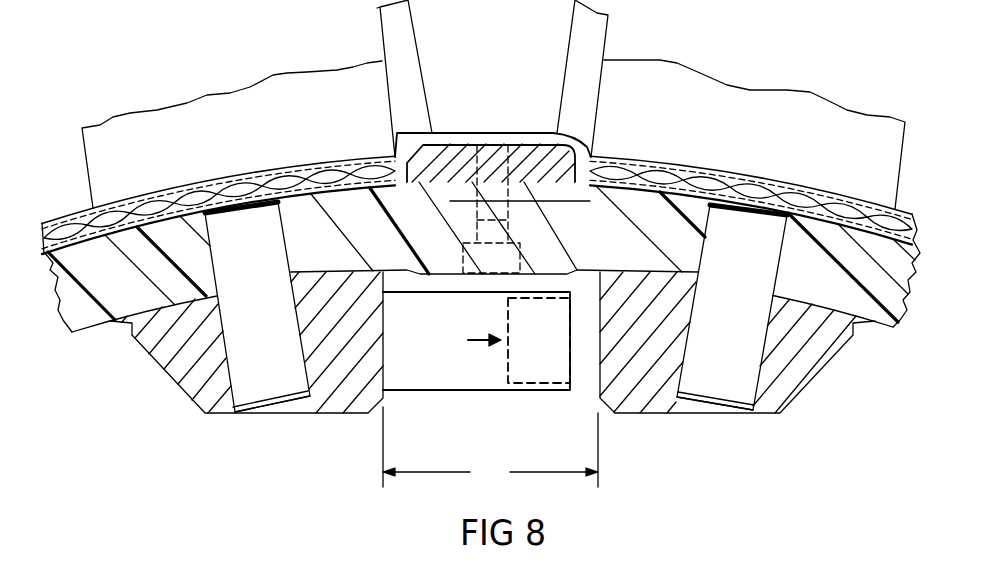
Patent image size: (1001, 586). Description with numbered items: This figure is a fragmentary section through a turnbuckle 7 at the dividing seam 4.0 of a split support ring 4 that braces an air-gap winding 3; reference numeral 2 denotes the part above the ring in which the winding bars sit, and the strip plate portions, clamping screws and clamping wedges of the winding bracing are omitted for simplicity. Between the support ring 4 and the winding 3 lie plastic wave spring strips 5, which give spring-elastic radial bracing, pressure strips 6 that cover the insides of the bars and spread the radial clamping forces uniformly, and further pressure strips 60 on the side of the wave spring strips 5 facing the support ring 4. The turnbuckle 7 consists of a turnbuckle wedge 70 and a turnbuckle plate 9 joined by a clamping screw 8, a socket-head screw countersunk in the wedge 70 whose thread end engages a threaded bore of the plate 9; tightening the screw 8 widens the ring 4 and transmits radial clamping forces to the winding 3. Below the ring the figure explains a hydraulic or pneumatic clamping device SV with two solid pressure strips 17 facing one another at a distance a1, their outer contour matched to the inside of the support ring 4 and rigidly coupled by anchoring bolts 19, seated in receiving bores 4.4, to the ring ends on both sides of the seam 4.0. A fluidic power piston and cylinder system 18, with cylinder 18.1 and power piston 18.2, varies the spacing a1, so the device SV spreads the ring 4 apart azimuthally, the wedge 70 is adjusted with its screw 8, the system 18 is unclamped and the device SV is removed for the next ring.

The wheel rim / support body 2 is at (505, 57).
The air-gap winding 3 is at (755, 122).
The support ring 4 is at (660, 215).
The dividing seam 4.0 is at (577, 133).
The receiving bores 4.4 is at (205, 250).
The plastic wave spring strips 5 is at (813, 190).
The pressure strips 6 is at (865, 204).
The turnbuckle 7 is at (536, 184).
The clamping screw 8 is at (520, 252).
The turnbuckle plate 9 is at (445, 157).
The pressure strips 17 is at (343, 387).
The fluidic power piston and cylinder system 18 is at (424, 358).
The cylinder 18.1 is at (492, 368).
The power piston 18.2 is at (584, 333).
The anchoring bolts 19 is at (255, 377).
The pressure strips 60 is at (141, 205).
The turnbuckle wedge 70 is at (442, 228).
The hydraulic or pneumatic clamping device SV is at (671, 472).
The distance a1 is at (490, 447).